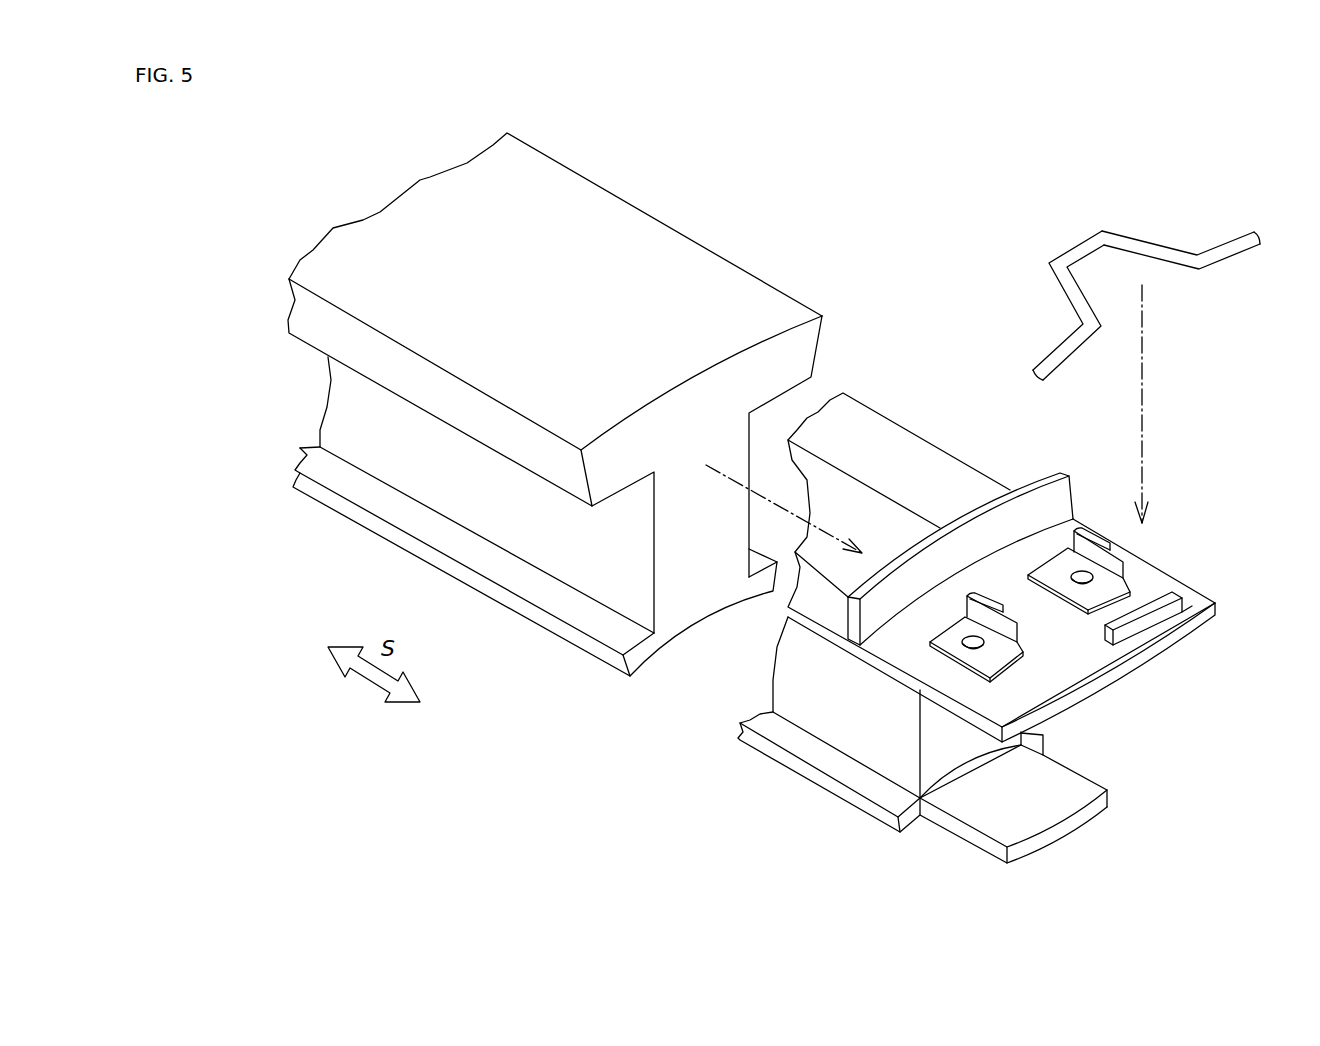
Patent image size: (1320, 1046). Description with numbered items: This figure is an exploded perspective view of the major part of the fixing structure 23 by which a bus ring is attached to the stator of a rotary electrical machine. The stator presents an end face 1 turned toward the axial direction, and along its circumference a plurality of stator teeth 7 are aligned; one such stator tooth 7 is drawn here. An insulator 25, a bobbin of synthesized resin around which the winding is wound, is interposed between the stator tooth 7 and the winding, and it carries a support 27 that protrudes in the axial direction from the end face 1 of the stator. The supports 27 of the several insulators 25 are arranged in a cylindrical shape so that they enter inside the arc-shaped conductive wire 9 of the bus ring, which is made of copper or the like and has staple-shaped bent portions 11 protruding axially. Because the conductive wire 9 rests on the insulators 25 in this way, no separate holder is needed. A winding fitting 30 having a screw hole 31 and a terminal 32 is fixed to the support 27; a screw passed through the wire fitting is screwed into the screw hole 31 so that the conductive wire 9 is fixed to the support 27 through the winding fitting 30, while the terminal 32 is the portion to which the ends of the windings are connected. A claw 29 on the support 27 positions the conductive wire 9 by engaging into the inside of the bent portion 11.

The end face 1 is at (793, 356).
The stator tooth 7 is at (579, 649).
The conductive wire 9 is at (1222, 264).
The bent portion 11 is at (1072, 238).
The fixing structure 23 is at (673, 178).
The insulator 25 is at (922, 438).
The support 27 is at (1080, 683).
The claw 29 is at (1157, 618).
The winding fitting 30 is at (928, 641).
The screw hole 31 is at (1080, 583).
The terminal 32 is at (1093, 530).